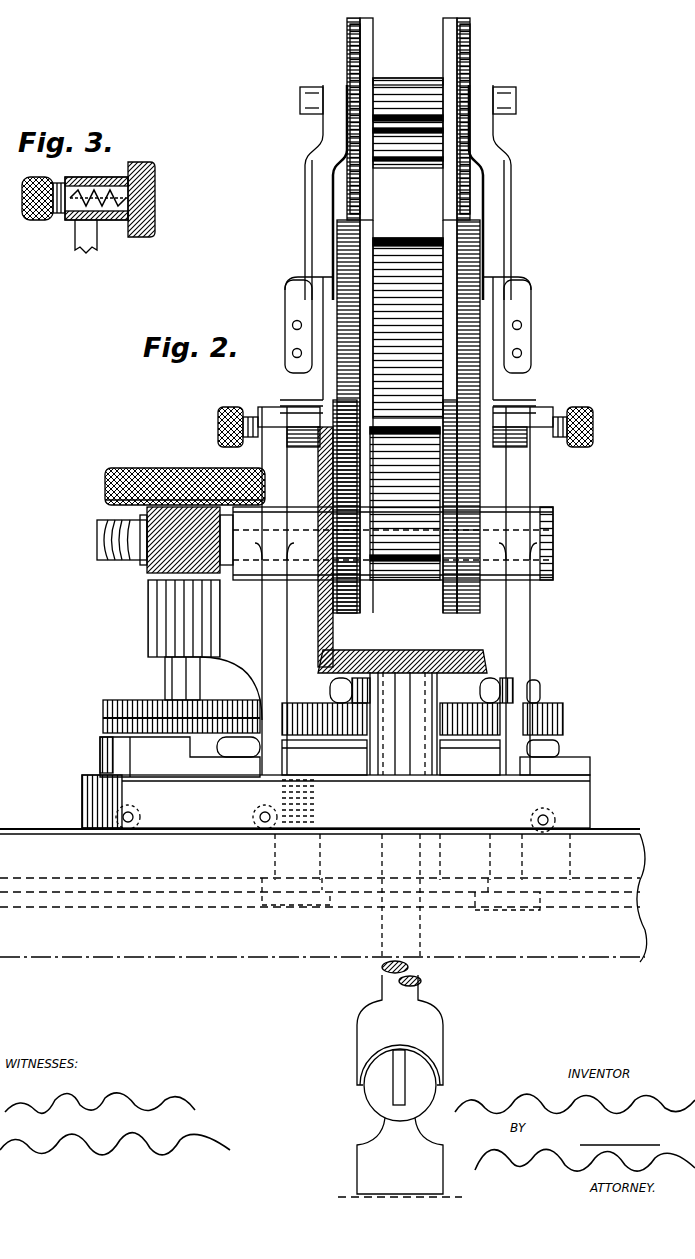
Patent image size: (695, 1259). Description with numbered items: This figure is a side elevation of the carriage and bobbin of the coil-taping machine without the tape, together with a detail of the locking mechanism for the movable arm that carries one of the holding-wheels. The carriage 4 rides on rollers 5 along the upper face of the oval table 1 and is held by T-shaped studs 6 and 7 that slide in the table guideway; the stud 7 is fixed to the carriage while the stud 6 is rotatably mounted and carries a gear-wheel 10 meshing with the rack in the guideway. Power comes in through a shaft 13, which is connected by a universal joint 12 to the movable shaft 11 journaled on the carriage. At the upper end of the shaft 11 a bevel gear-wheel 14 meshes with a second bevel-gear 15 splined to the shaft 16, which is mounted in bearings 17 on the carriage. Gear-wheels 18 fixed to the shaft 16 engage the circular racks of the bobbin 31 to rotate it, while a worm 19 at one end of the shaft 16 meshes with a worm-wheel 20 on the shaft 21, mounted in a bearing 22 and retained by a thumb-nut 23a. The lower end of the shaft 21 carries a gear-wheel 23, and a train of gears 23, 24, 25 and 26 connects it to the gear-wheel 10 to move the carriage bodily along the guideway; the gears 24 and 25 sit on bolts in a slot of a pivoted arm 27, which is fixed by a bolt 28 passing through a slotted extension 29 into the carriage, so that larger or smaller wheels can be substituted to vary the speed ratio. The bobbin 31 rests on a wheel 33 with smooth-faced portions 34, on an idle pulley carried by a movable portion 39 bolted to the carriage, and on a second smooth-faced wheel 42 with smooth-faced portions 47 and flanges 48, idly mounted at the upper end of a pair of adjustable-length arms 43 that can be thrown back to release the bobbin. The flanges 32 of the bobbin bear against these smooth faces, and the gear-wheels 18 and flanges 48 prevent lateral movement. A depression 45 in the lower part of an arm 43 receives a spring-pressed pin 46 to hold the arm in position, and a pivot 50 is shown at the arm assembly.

In FIG. 2, the table 1 is at (323, 895).
In FIG. 2, the carriage 4 is at (336, 801).
In FIG. 2, the rollers 5 is at (126, 832).
In FIG. 2, the T-shaped stud 6 is at (517, 908).
In FIG. 2, the T-shaped stud 7 is at (293, 905).
In FIG. 2, the gear-wheel 10 is at (585, 863).
In FIG. 2, the movable shaft 11 is at (408, 966).
In FIG. 2, the universal joint 12 is at (385, 1087).
In FIG. 2, the shaft 13 is at (400, 1157).
In FIG. 2, the bevel gear-wheel 14 is at (397, 660).
In FIG. 2, the bevel-gear 15 is at (316, 640).
In FIG. 2, the shaft 16 is at (553, 541).
In FIG. 2, the bearings 17 is at (571, 497).
In FIG. 2, the gear-wheels 18 is at (362, 633).
In FIG. 2, the worm 19 is at (152, 543).
In FIG. 2, the worm-wheel 20 is at (100, 540).
In FIG. 2, the shaft 21 is at (180, 672).
In FIG. 2, the bearing 22 is at (172, 623).
In FIG. 2, the gear-wheel 23 is at (170, 720).
In FIG. 2, the thumb-nut 23a is at (108, 485).
In FIG. 2, the gear 24 is at (106, 703).
In FIG. 2, the gear 25 is at (324, 734).
In FIG. 2, the gear 26 is at (565, 718).
In FIG. 2, the pivoted arm 27 is at (391, 739).
In FIG. 2, the bolt 28 is at (118, 740).
In FIG. 2, the slotted extension 29 is at (118, 761).
In FIG. 2, the bobbin 31 is at (363, 333).
In FIG. 2, the flanges 32 is at (445, 348).
In FIG. 2, the wheel 33 is at (405, 503).
In FIG. 2, the smooth-faced portions 34 is at (360, 594).
In FIG. 2, the movable portion 39 is at (538, 697).
In FIG. 2, the second smooth-faced wheel 42 is at (400, 98).
In FIG. 2, the arms 43 is at (316, 182).
In FIG. 3, the depression 45 is at (156, 192).
In FIG. 3, the spring-pressed pin 46 is at (138, 222).
In FIG. 2, the smooth-faced portions 47 is at (360, 36).
In FIG. 2, the flanges 48 is at (352, 61).
In FIG. 2, the pivot arms 50 is at (345, 165).